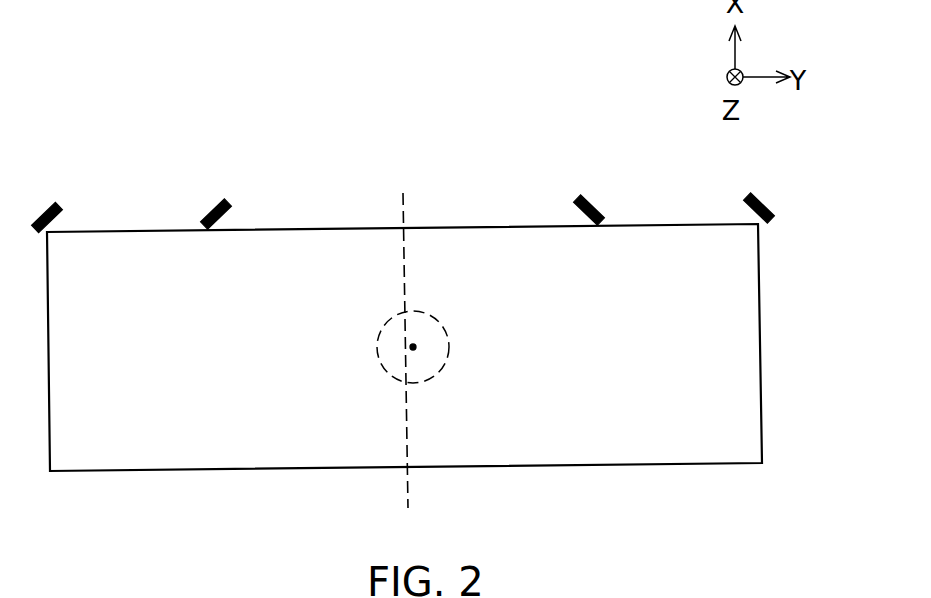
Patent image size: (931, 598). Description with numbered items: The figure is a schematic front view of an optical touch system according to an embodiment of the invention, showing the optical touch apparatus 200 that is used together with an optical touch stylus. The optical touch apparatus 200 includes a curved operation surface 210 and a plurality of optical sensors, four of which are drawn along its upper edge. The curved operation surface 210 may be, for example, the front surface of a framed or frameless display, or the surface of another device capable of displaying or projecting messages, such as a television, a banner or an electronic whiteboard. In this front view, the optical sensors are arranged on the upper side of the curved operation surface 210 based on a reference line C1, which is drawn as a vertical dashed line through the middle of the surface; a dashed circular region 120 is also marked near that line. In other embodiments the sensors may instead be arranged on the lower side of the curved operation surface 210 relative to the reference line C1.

The optical touch apparatus 200 is at (148, 138).
The curved operation surface 210 is at (133, 232).
The sensing region 120 is at (413, 347).
The reference line C1 is at (401, 333).